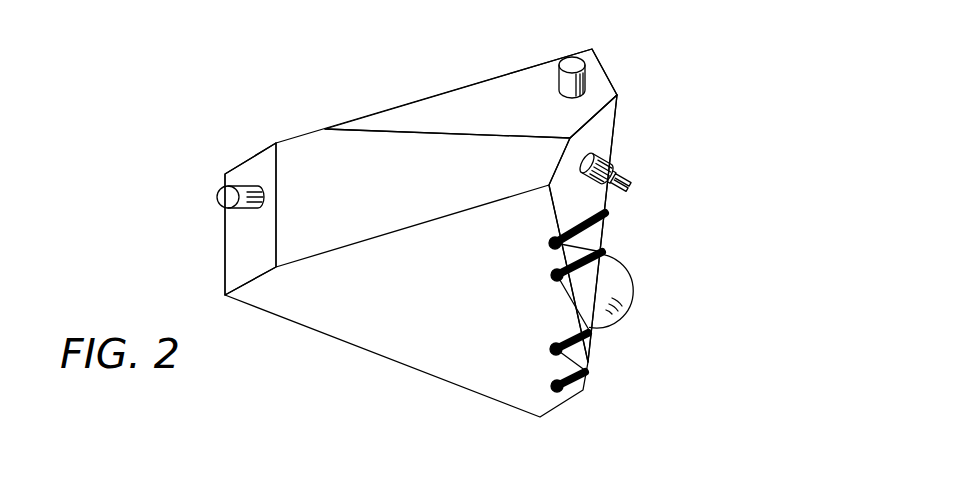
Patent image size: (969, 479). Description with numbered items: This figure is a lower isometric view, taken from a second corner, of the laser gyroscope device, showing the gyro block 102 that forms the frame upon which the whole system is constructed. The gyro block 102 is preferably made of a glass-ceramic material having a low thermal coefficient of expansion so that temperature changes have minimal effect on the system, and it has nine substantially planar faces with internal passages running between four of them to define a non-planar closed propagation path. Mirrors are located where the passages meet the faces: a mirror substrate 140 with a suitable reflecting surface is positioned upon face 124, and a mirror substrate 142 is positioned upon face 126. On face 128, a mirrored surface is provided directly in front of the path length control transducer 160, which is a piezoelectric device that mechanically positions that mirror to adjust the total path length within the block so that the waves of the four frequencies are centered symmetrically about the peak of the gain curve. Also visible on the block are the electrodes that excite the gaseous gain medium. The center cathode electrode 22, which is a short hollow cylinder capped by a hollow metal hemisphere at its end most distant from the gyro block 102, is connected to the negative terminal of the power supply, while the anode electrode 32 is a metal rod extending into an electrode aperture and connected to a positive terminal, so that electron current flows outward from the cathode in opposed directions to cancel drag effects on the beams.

The gyro block 102 is at (405, 350).
The face 124 is at (267, 163).
The face 126 is at (467, 97).
The face 128 is at (605, 122).
The mirror substrate 140 is at (223, 207).
The mirror substrate 142 is at (588, 78).
The path length control transducer 160 is at (605, 157).
The cathode electrode 22 is at (628, 289).
The anode electrode 32 is at (595, 362).